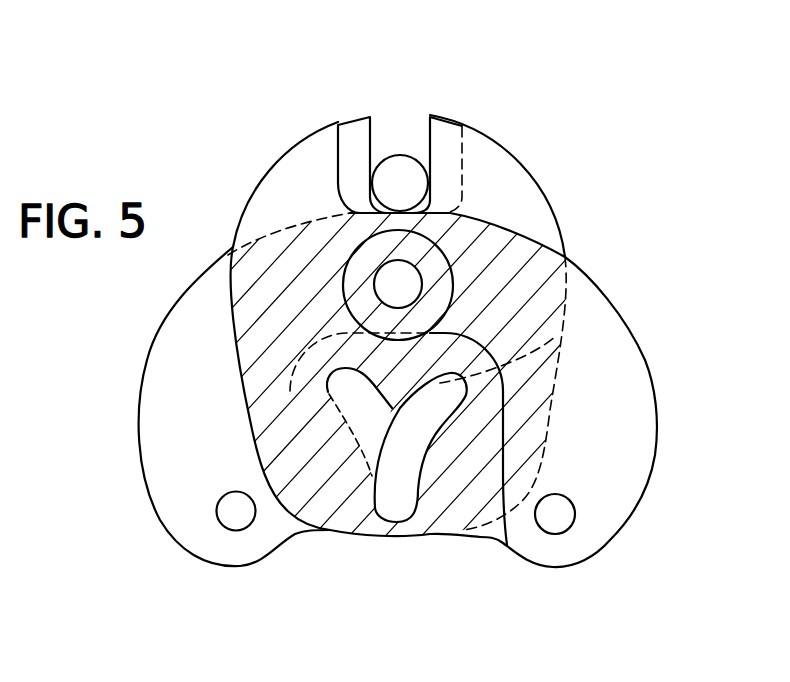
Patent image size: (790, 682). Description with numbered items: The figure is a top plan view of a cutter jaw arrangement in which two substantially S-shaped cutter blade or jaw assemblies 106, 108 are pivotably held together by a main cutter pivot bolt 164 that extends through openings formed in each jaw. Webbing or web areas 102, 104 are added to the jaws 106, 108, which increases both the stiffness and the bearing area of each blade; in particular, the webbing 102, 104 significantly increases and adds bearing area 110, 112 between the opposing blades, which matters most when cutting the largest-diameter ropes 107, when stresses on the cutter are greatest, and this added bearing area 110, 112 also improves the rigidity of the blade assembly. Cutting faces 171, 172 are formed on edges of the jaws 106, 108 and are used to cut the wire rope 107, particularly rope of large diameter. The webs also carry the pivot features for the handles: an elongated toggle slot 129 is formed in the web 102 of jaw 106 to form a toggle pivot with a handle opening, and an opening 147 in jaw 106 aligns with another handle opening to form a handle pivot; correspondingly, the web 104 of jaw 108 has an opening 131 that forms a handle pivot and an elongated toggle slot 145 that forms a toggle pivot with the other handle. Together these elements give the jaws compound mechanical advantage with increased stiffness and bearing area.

The web area 102 is at (258, 427).
The web area 104 is at (545, 380).
The cutter jaw 106 is at (308, 161).
The wire rope 107 is at (397, 154).
The cutter jaw 108 is at (505, 186).
The bearing area 110 is at (246, 374).
The bearing area 112 is at (465, 503).
The elongated toggle slot 129 is at (386, 501).
The opening 131 is at (232, 516).
The elongated toggle slot 145 is at (290, 385).
The opening 147 is at (560, 521).
The main cutter pivot bolt 164 is at (422, 271).
The cutting face 171 is at (373, 125).
The cutting face 172 is at (425, 120).